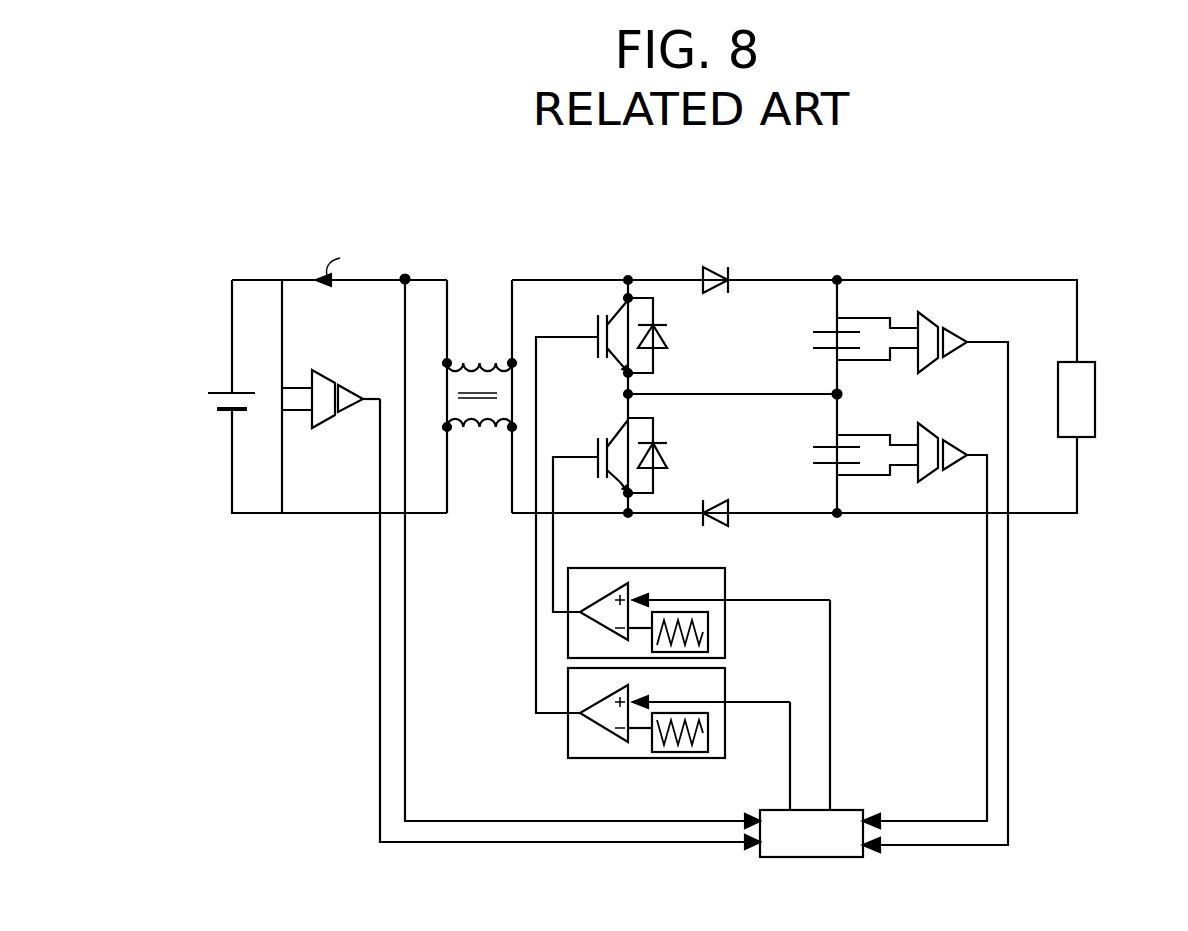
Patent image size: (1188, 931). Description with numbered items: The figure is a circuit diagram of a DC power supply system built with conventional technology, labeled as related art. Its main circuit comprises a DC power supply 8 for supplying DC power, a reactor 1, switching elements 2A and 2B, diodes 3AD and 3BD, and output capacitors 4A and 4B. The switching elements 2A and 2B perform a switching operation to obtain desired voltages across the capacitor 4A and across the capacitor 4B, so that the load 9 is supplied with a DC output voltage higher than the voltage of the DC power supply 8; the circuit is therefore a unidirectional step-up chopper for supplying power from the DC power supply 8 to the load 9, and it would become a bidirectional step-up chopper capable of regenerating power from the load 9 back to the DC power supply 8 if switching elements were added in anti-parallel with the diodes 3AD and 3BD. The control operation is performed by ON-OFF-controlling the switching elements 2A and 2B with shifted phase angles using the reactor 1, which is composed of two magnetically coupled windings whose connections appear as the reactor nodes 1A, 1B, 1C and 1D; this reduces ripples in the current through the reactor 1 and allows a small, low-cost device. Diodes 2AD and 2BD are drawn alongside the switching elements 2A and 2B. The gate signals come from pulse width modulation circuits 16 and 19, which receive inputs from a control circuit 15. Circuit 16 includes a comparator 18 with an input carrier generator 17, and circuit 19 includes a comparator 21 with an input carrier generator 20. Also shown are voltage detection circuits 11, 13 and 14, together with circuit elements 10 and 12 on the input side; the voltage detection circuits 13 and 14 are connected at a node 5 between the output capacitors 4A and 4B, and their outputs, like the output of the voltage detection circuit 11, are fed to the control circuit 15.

The reactor 1 is at (461, 406).
The reactor node 1A is at (481, 349).
The reactor node 1B is at (481, 442).
The reactor node 1C is at (429, 347).
The reactor node 1D is at (428, 442).
The switching element 2A is at (594, 324).
The switching element 2B is at (590, 442).
The diode 2AD is at (669, 336).
The diode 2BD is at (669, 456).
The diode 3AD is at (722, 266).
The diode 3BD is at (722, 527).
The output capacitor 4A is at (825, 313).
The output capacitor 4B is at (832, 467).
The node 5 is at (847, 394).
The DC power supply 8 is at (217, 388).
The load 9 is at (1098, 407).
The circuit element 10 is at (345, 260).
The voltage detection circuit 11 is at (322, 370).
The circuit element 12 is at (405, 280).
The voltage detection circuit 13 is at (925, 312).
The voltage detection circuit 14 is at (930, 482).
The control circuit 15 is at (832, 810).
The pulse width modulation circuit 16 is at (679, 743).
The carrier generator 17 is at (710, 730).
The comparator 18 is at (608, 735).
The pulse width modulation circuit 19 is at (699, 598).
The carrier generator 20 is at (710, 632).
The comparator 21 is at (600, 592).